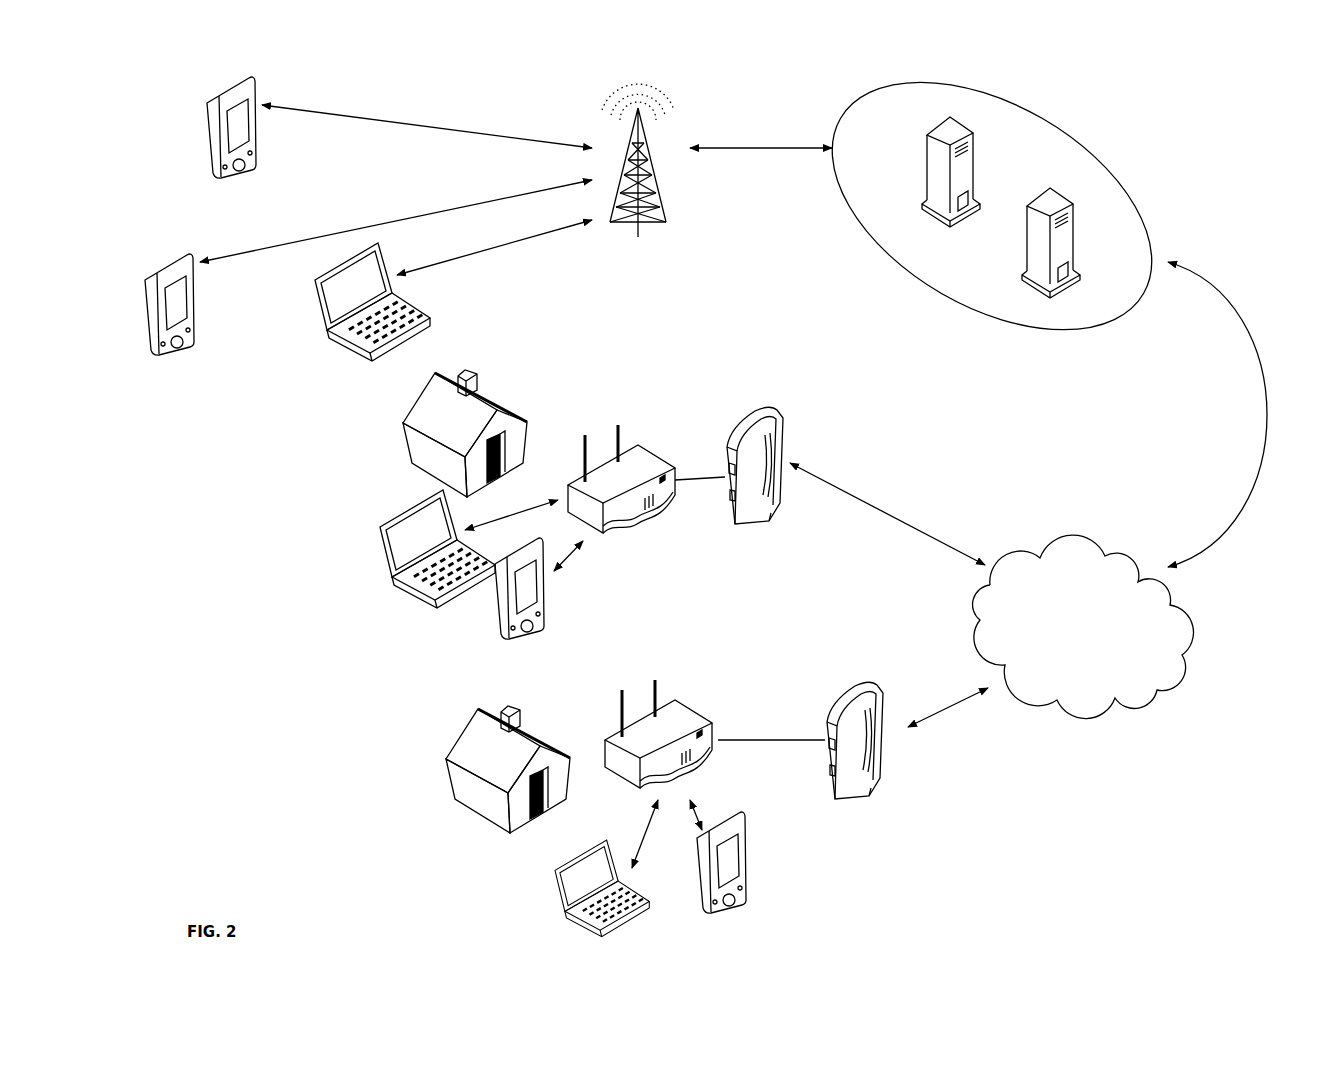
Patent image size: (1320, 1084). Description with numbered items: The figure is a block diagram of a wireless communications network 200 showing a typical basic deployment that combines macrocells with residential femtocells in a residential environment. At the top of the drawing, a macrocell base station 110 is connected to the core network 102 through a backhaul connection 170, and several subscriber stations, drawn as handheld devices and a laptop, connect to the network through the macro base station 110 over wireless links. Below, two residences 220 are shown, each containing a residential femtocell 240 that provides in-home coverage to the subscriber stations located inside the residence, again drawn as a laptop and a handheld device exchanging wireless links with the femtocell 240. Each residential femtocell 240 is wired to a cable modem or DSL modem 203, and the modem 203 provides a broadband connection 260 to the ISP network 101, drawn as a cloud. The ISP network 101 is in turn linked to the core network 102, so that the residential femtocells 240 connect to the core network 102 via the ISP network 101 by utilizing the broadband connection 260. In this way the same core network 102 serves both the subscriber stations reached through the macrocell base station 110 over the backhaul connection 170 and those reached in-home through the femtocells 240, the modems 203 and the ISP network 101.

The macrocell base station 110 is at (662, 134).
The backhaul connection 170 is at (785, 157).
The core network 102 is at (1093, 153).
The residence 220 is at (447, 782).
The residential femtocell 240 is at (700, 722).
The cable modem or DSL modem 203 is at (926, 766).
The broadband connection 260 is at (952, 700).
The ISP network 101 is at (1180, 677).
The communications network 200 is at (1052, 892).